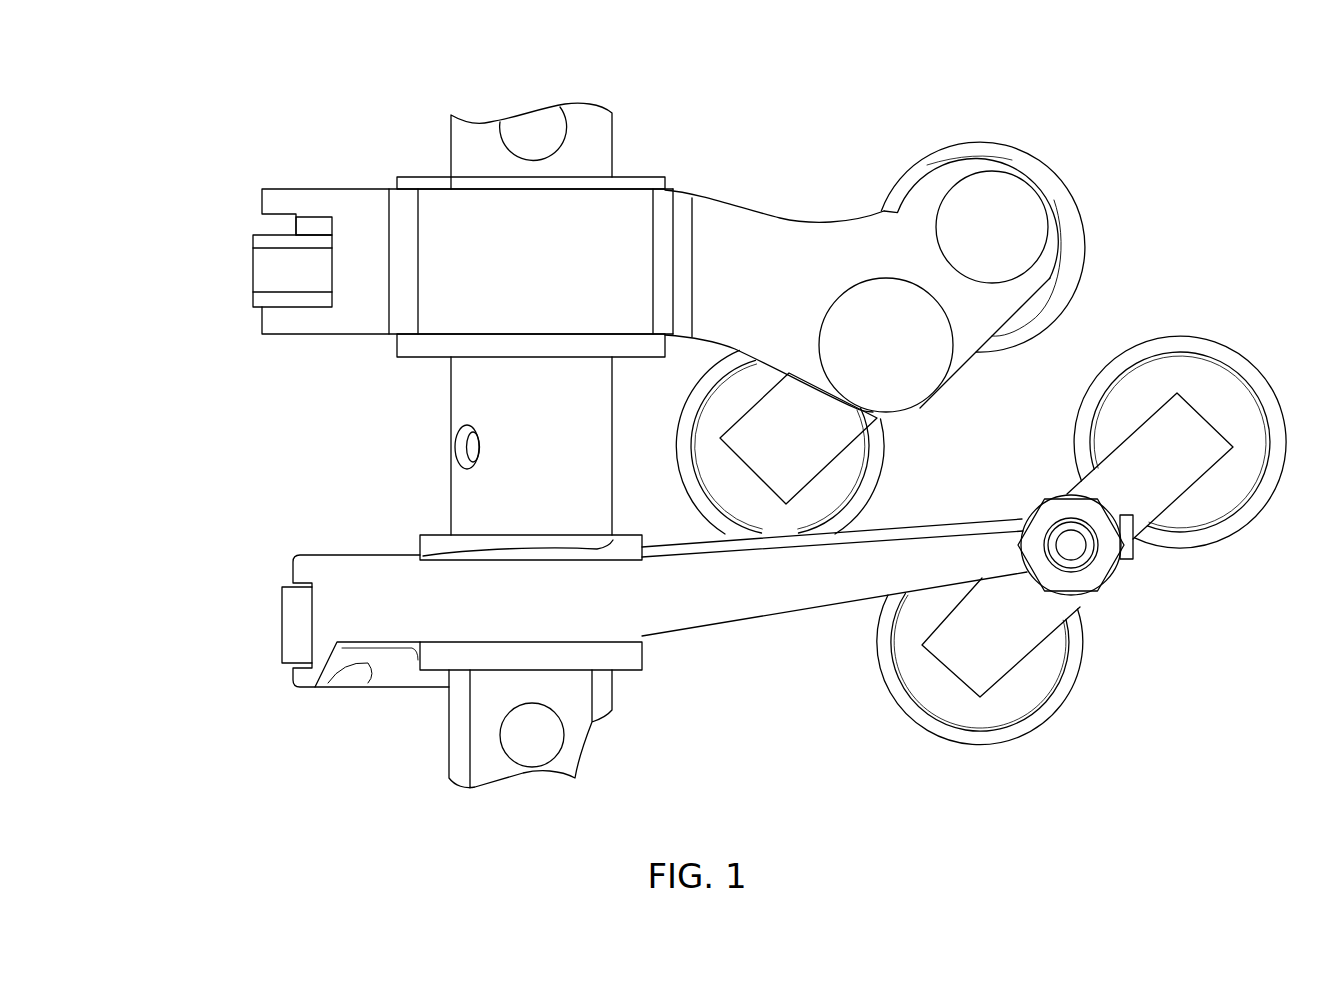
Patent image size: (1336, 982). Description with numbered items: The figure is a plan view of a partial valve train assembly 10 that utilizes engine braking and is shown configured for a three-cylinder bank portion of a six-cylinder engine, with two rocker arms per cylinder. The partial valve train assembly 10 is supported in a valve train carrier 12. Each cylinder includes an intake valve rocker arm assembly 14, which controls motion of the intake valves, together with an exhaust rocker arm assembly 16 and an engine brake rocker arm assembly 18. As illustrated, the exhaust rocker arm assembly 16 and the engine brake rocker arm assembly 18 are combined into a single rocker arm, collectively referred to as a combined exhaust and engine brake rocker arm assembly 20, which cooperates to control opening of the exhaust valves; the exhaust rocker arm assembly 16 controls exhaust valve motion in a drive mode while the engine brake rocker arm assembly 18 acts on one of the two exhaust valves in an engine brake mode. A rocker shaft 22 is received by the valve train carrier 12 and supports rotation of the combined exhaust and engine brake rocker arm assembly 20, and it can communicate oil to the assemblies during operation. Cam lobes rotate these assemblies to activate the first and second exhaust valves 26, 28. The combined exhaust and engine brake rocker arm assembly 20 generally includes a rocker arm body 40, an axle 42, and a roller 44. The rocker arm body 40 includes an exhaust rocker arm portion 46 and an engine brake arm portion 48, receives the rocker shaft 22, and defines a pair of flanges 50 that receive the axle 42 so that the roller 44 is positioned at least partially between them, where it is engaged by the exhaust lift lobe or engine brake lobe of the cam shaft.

The partial valve train assembly 10 is at (176, 107).
The valve train carrier 12 is at (482, 722).
The intake valve rocker arm assembly 14 is at (831, 619).
The exhaust rocker arm assembly 16 is at (944, 409).
The engine brake rocker arm assembly 18 is at (1060, 150).
The combined exhaust and engine brake rocker arm assembly 20 is at (957, 282).
The rocker shaft 22 is at (452, 412).
The first exhaust valve 26 is at (945, 148).
The second exhaust valve 28 is at (678, 492).
The rocker arm body 40 is at (708, 205).
The axle 42 is at (297, 230).
The roller 44 is at (253, 270).
The exhaust rocker arm portion 46 is at (900, 395).
The engine brake arm portion 48 is at (1033, 245).
The flanges 50 is at (287, 190).